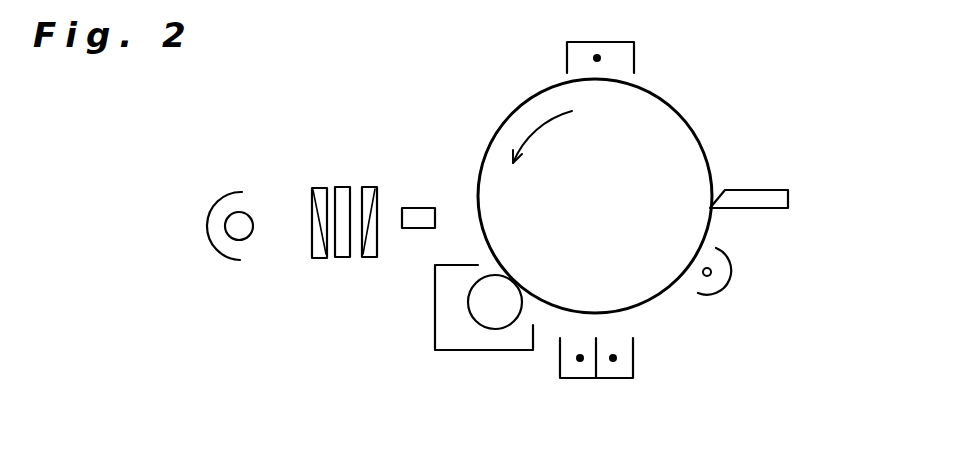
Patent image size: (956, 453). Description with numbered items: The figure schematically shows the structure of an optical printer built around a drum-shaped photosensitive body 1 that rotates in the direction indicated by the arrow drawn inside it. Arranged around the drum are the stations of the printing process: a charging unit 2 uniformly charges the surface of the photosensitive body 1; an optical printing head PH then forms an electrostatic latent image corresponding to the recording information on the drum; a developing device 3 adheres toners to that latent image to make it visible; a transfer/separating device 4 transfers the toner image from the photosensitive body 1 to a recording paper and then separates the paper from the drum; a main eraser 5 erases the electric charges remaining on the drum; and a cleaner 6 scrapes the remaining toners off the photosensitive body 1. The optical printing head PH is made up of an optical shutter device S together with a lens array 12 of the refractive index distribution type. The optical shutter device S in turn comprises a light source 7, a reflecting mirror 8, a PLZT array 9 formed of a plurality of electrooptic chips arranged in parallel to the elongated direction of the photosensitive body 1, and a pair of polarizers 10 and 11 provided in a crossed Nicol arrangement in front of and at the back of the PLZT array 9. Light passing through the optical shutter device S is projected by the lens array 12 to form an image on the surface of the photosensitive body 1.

The photosensitive body 1 is at (687, 125).
The charging unit 2 is at (634, 52).
The developing device 3 is at (435, 323).
The transfer/separating device 4 is at (633, 362).
The main eraser 5 is at (730, 272).
The cleaner 6 is at (788, 190).
The light source 7 is at (250, 217).
The reflecting mirror 8 is at (207, 230).
The PLZT array 9 is at (340, 258).
The polarizer 10 is at (313, 258).
The polarizer 11 is at (358, 275).
The lens array 12 is at (423, 208).
The optical shutter device S is at (303, 303).
The optical printing head PH is at (370, 140).